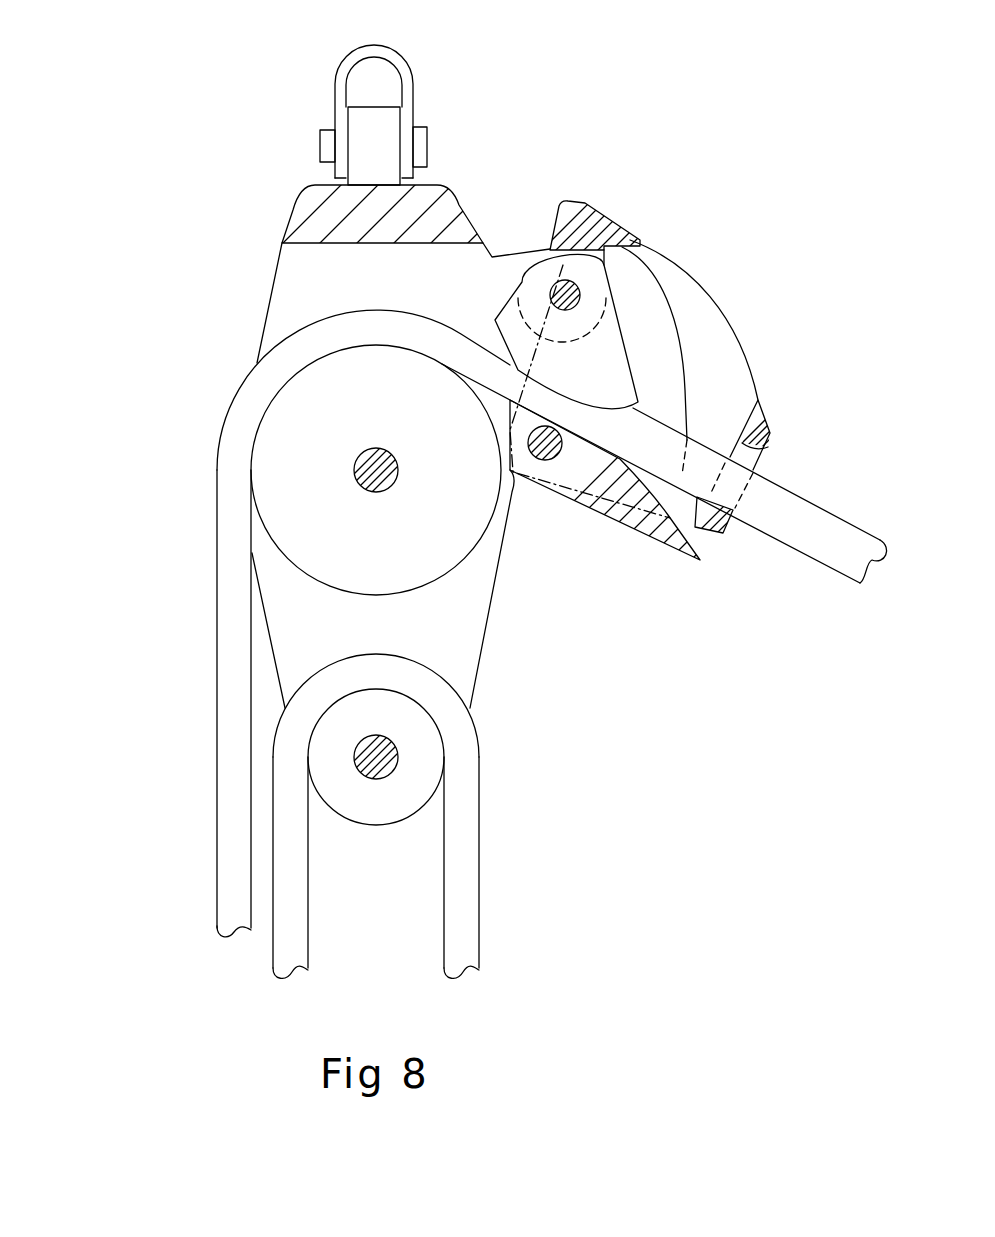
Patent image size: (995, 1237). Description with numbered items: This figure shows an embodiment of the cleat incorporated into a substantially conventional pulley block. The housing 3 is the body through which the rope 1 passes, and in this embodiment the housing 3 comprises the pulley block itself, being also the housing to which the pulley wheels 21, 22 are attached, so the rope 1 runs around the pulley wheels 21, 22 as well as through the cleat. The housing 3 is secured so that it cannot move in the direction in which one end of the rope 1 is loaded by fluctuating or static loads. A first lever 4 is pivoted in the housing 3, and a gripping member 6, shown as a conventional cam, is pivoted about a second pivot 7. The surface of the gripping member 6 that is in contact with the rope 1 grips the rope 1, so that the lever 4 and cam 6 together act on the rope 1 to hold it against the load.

The rope 1 is at (806, 520).
The housing 3 is at (425, 633).
The first lever 4 is at (718, 370).
The gripping member 6 is at (600, 377).
The second pivot 7 is at (565, 290).
The pulley wheel 21 is at (330, 463).
The pulley wheel 22 is at (330, 757).